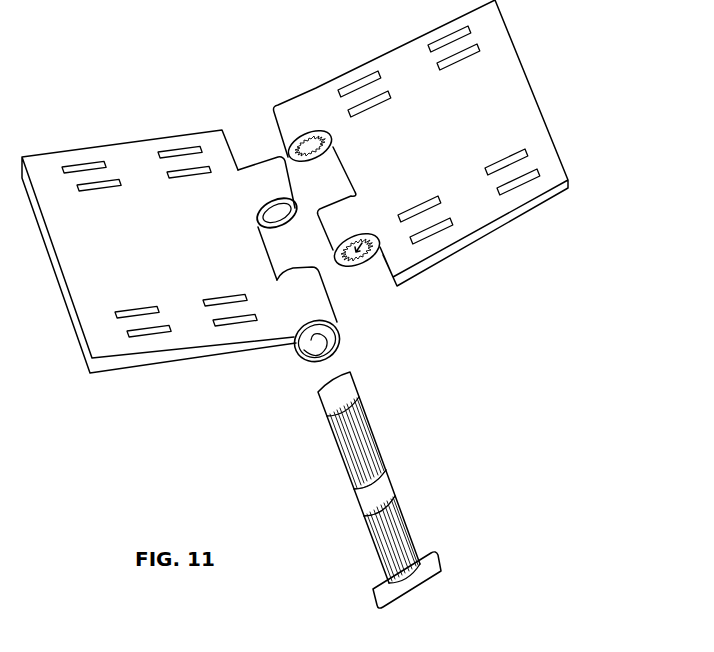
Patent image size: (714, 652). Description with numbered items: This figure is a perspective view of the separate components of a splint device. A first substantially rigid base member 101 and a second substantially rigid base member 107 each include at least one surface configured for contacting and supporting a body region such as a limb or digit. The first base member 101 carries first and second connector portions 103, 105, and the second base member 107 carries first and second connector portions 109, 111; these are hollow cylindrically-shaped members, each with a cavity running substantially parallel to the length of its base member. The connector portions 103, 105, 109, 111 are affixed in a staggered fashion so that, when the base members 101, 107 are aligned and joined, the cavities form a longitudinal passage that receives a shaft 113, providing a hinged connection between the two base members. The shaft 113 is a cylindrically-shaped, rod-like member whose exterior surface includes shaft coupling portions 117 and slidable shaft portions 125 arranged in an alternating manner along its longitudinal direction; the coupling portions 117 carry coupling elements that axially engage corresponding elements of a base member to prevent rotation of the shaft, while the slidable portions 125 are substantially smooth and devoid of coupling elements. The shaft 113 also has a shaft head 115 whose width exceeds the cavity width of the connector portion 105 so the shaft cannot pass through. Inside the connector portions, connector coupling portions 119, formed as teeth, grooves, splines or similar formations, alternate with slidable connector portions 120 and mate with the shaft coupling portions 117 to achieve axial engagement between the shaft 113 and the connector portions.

The first substantially rigid base member 101 is at (130, 359).
The first connector portion 103 is at (262, 168).
The second connector portion 105 is at (299, 278).
The second substantially rigid base member 107 is at (478, 236).
The first connector portion 109 is at (291, 105).
The second connector portion 111 is at (335, 211).
The shaft 113 is at (382, 431).
The shaft head 115 is at (412, 578).
The shaft coupling portions 117 is at (339, 433).
The connector coupling portions 119 is at (360, 258).
The slidable connector portions 120 is at (307, 359).
The slidable shaft portions 125 is at (361, 394).